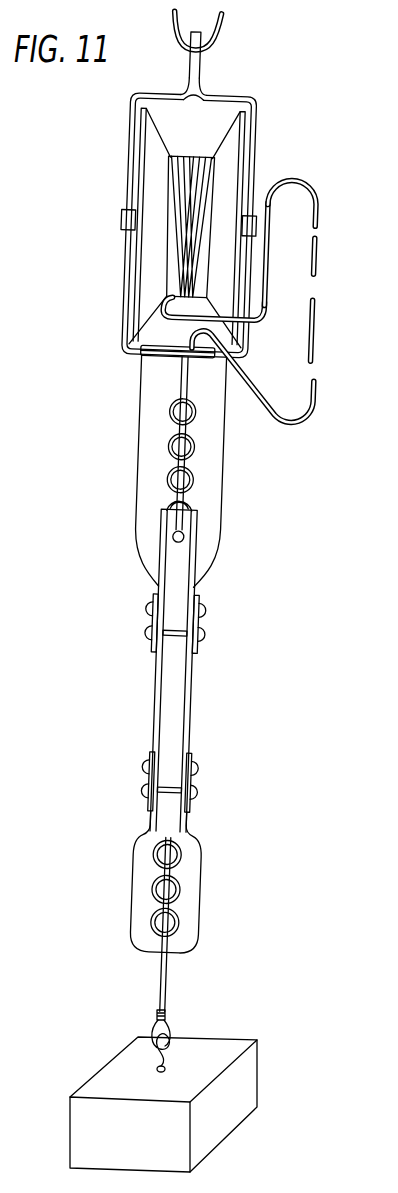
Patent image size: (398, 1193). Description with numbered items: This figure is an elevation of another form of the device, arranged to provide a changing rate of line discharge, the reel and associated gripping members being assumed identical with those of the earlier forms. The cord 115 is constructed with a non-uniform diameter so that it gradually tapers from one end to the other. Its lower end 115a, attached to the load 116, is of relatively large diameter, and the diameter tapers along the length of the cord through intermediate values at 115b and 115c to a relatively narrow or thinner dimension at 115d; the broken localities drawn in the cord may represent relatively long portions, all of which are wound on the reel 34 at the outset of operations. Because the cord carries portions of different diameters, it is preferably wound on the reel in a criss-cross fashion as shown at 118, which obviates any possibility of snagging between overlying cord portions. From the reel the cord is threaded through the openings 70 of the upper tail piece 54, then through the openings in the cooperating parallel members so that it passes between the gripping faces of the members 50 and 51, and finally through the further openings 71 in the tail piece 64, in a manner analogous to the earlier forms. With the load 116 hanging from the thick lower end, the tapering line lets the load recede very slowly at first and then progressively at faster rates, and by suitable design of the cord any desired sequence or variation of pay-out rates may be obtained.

The reel 34 is at (152, 175).
The criss-cross winding 118 is at (201, 152).
The cord 115 is at (287, 271).
The lower end of cord 115a is at (167, 975).
The intermediate cord portion 115b is at (317, 327).
The intermediate cord portion 115c is at (318, 258).
The thin cord portion 115d is at (302, 175).
The upper tail piece 54 is at (150, 391).
The gripping member 51 is at (140, 471).
The openings of upper tail piece 70 is at (167, 483).
The gripping member 50 is at (195, 708).
The tail piece 64 is at (193, 886).
The openings of tail piece 71 is at (155, 920).
The load 116 is at (222, 1047).